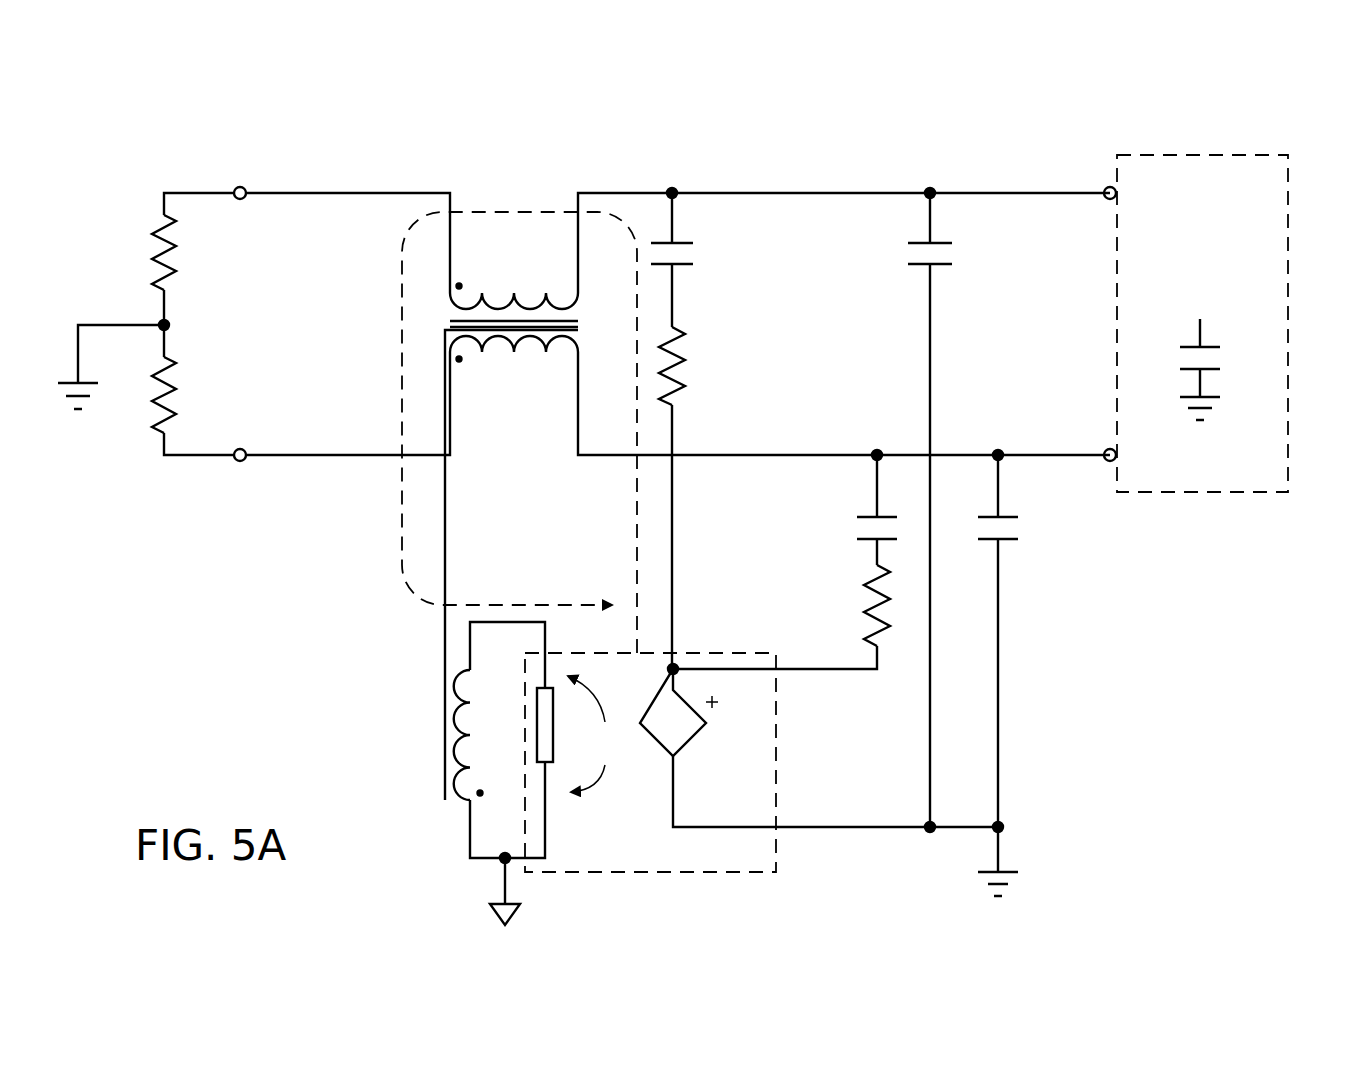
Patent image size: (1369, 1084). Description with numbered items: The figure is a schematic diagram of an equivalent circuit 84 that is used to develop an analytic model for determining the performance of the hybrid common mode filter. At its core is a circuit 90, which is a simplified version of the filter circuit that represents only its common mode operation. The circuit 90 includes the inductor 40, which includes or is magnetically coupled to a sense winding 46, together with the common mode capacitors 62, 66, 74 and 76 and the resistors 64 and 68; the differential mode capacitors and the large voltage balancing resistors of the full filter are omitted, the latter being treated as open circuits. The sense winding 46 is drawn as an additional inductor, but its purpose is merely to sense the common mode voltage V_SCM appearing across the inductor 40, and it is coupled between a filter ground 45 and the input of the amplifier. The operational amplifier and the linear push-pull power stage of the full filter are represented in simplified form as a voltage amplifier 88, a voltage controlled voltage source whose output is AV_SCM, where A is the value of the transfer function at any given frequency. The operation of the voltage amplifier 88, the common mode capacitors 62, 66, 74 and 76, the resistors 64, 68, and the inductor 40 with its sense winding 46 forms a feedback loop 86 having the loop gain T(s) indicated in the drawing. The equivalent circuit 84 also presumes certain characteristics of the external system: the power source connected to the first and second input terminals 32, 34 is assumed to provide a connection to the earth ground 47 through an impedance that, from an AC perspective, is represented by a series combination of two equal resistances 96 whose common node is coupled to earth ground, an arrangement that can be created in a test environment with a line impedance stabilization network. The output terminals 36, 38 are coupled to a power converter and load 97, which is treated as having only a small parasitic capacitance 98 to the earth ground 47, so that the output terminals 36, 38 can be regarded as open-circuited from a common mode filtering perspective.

The first input terminal 32 is at (243, 183).
The second input terminal 34 is at (232, 468).
The first output terminal 36 is at (1097, 178).
The second output terminal 38 is at (1103, 466).
The inductor 40 is at (524, 362).
The filter ground 45 is at (499, 910).
The sense winding 46 is at (435, 796).
The earth ground 47 is at (1007, 869).
The common mode capacitor 62 is at (838, 530).
The resistor 64 is at (852, 620).
The common mode capacitor 66 is at (703, 256).
The resistor 68 is at (699, 373).
The common mode capacitor 74 is at (1020, 552).
The common mode capacitor 76 is at (905, 256).
The equivalent circuit 84 is at (172, 135).
The feedback loop 86 is at (471, 208).
The voltage amplifier 88 is at (664, 875).
The circuit 90 is at (857, 155).
The resistances 96 is at (147, 238).
The power converter and load 97 is at (1182, 153).
The parasitic capacitance 98 is at (1240, 360).